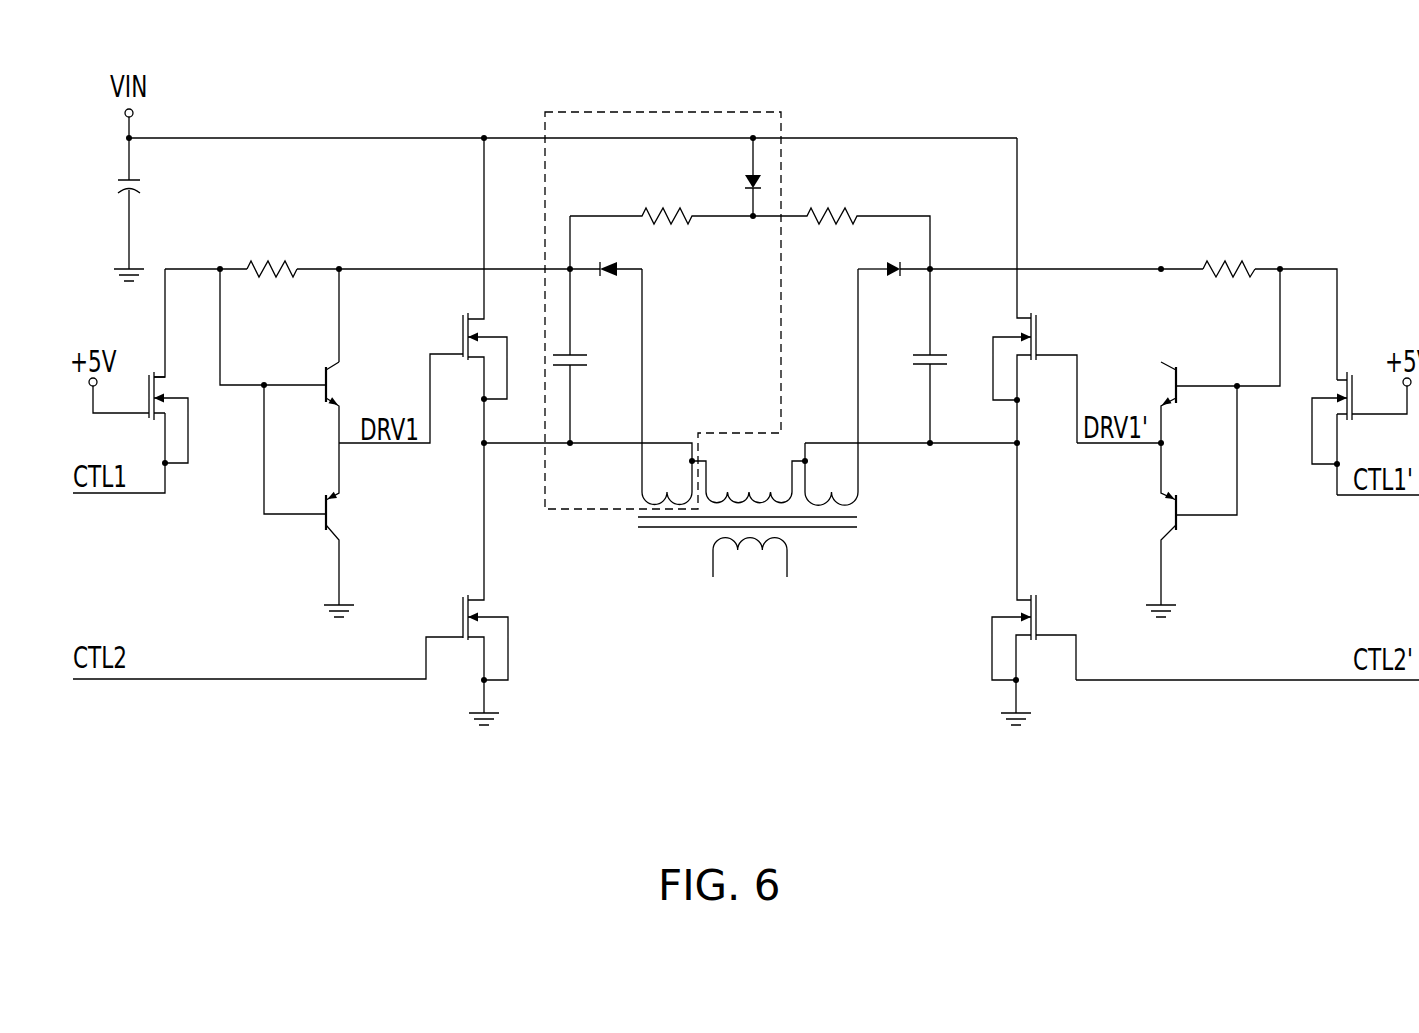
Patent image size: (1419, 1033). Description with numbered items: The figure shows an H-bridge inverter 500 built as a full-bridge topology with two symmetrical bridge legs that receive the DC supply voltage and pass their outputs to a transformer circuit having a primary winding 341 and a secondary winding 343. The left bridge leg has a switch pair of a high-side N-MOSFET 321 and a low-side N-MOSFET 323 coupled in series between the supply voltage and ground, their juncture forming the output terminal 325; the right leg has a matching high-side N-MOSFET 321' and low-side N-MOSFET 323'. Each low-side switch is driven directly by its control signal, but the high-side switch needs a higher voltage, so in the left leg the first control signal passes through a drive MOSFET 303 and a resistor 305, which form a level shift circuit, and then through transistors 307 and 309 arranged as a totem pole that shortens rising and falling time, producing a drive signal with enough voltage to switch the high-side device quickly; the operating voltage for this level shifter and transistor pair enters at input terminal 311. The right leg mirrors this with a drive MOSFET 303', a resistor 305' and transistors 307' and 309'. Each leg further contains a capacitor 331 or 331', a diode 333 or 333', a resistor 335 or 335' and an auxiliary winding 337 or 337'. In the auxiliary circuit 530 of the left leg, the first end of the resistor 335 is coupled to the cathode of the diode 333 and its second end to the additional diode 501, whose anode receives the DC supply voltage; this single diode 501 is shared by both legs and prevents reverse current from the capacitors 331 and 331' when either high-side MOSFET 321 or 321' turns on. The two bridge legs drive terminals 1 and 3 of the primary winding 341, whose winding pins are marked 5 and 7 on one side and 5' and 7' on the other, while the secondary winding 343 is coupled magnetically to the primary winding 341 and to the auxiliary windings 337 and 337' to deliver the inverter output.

The H-bridge inverter 500 is at (1158, 96).
The auxiliary circuit 530 is at (680, 112).
The additional diode 501 is at (748, 180).
The drive MOSFET 303 is at (151, 390).
The drive MOSFET 303' is at (1351, 393).
The resistor 305 is at (275, 299).
The resistor 305' is at (1227, 299).
The transistor 307 is at (304, 402).
The transistor 307' is at (1198, 402).
The transistor 309 is at (303, 524).
The transistor 309' is at (1201, 524).
The input terminal 311 is at (355, 272).
The high-side N-MOSFET 321 is at (473, 290).
The high-side N-MOSFET 321' is at (1033, 290).
The low-side N-MOSFET 323 is at (474, 578).
The low-side N-MOSFET 323' is at (1029, 578).
The output terminal 325 is at (486, 447).
The capacitor 331 is at (588, 356).
The capacitor 331' is at (912, 356).
The diode 333 is at (615, 297).
The diode 333' is at (891, 298).
The resistor 335 is at (661, 246).
The resistor 335' is at (841, 246).
The auxiliary winding 337 is at (636, 387).
The auxiliary winding 337' is at (869, 387).
The primary winding 341 is at (762, 489).
The secondary winding 343 is at (748, 555).
The terminal 1 is at (784, 486).
The terminal 3 is at (718, 486).
The transformer pin 5 is at (683, 486).
The transformer pin 7 is at (652, 486).
The transformer pin 5' is at (817, 486).
The transformer pin 7' is at (850, 486).